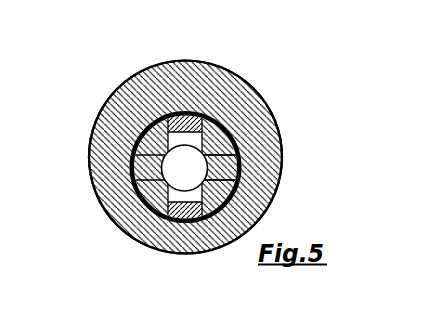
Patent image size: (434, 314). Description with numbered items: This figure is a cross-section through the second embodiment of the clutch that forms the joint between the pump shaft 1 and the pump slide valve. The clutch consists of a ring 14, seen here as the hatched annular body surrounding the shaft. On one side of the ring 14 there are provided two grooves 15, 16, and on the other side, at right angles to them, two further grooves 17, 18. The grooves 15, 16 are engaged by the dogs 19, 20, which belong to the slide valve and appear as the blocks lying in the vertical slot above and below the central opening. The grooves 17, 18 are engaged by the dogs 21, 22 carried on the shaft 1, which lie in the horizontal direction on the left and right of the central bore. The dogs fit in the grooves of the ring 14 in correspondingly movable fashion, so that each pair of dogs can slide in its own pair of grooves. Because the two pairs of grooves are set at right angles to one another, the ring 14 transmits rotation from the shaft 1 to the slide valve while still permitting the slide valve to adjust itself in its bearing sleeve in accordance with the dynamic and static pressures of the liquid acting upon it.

The pump shaft 1 is at (143, 95).
The ring 14 is at (210, 140).
The groove 15 is at (188, 120).
The groove 16 is at (185, 198).
The groove 17 is at (121, 191).
The groove 18 is at (217, 167).
The dog 19 is at (185, 138).
The dog 20 is at (183, 213).
The dog 21 is at (140, 163).
The dog 22 is at (227, 175).